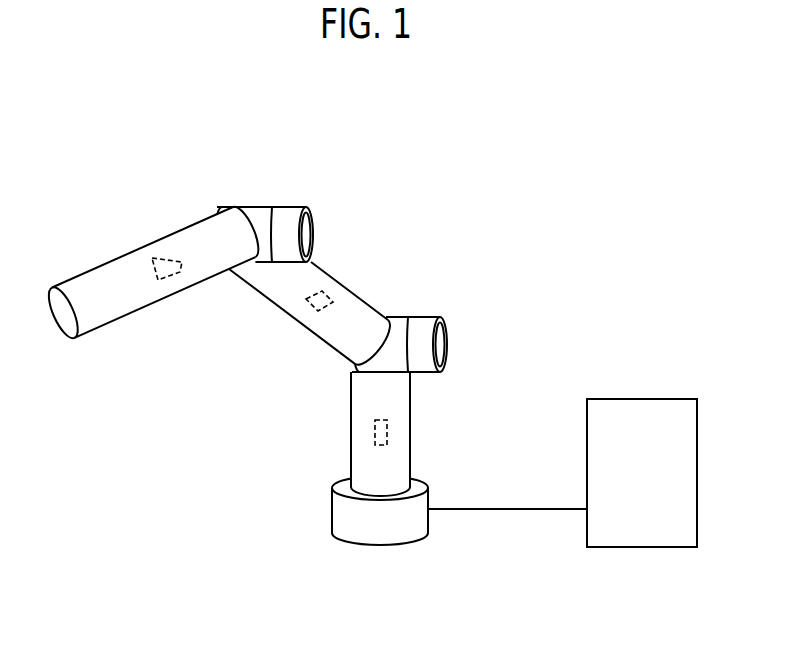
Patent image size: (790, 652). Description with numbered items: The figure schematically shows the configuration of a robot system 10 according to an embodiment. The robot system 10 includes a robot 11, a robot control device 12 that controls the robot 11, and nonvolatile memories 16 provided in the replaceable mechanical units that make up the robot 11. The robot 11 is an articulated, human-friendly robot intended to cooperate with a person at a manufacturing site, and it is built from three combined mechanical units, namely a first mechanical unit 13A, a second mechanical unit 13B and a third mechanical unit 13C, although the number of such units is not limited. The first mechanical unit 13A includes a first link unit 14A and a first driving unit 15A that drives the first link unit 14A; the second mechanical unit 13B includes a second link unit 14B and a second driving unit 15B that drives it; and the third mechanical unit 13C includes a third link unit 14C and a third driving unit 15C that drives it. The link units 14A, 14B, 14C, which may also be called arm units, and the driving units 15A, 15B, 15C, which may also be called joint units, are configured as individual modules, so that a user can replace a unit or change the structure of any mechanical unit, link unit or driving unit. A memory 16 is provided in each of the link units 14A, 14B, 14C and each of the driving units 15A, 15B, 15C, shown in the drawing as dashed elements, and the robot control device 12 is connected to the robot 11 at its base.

The robot system 10 is at (549, 168).
The robot 11 is at (268, 306).
The robot control device 12 is at (661, 399).
The first mechanical unit 13A is at (220, 457).
The second mechanical unit 13B is at (473, 237).
The third mechanical unit 13C is at (285, 139).
The first link unit 14A is at (350, 453).
The second link unit 14B is at (363, 301).
The third link unit 14C is at (180, 229).
The first driving unit 15A is at (332, 517).
The second driving unit 15B is at (420, 317).
The third driving unit 15C is at (263, 207).
The nonvolatile memory 16 is at (150, 245).